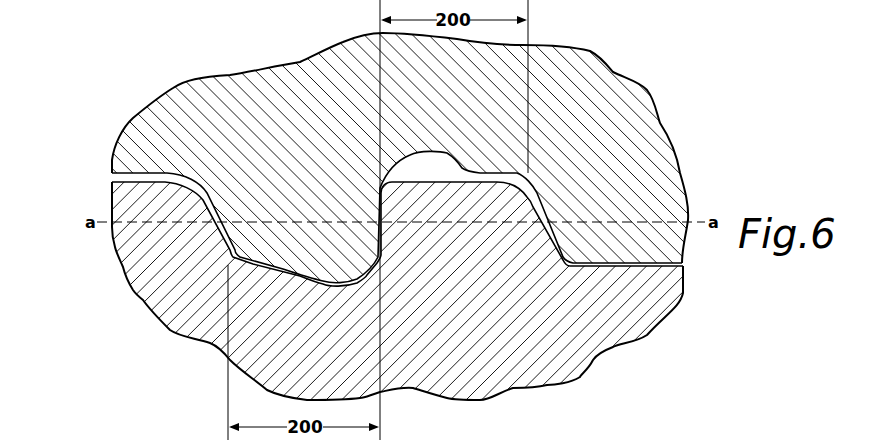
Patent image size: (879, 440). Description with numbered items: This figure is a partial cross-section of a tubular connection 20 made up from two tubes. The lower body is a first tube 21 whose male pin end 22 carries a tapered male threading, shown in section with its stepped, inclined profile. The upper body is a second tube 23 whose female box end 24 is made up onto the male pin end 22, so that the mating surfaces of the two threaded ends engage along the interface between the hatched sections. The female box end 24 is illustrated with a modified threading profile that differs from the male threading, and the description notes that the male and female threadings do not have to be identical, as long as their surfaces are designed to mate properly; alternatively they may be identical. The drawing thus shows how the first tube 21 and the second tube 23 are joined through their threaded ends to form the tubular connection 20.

The tubular connection 20 is at (645, 66).
The first tube 21 is at (143, 298).
The male pin end 22 is at (647, 322).
The second tube 23 is at (152, 112).
The female box end 24 is at (640, 144).